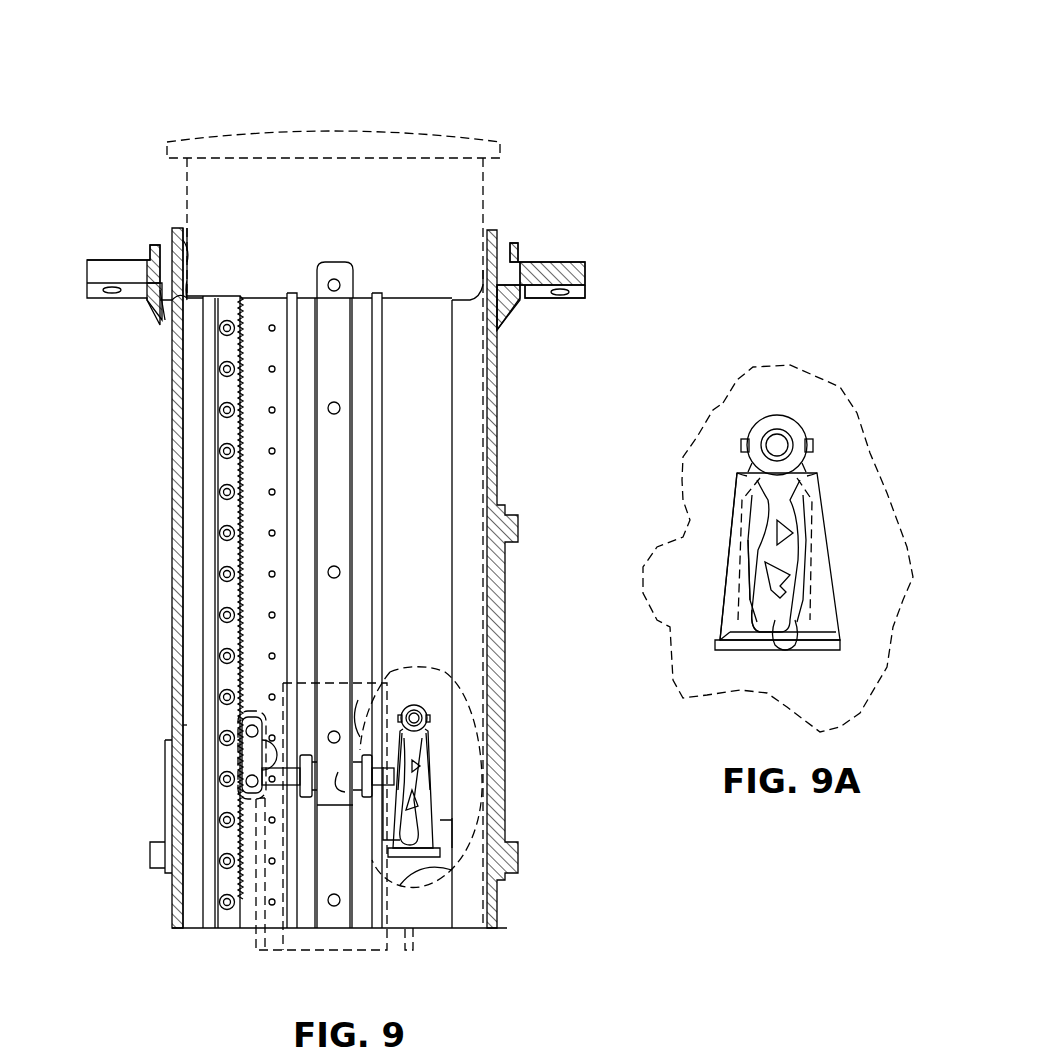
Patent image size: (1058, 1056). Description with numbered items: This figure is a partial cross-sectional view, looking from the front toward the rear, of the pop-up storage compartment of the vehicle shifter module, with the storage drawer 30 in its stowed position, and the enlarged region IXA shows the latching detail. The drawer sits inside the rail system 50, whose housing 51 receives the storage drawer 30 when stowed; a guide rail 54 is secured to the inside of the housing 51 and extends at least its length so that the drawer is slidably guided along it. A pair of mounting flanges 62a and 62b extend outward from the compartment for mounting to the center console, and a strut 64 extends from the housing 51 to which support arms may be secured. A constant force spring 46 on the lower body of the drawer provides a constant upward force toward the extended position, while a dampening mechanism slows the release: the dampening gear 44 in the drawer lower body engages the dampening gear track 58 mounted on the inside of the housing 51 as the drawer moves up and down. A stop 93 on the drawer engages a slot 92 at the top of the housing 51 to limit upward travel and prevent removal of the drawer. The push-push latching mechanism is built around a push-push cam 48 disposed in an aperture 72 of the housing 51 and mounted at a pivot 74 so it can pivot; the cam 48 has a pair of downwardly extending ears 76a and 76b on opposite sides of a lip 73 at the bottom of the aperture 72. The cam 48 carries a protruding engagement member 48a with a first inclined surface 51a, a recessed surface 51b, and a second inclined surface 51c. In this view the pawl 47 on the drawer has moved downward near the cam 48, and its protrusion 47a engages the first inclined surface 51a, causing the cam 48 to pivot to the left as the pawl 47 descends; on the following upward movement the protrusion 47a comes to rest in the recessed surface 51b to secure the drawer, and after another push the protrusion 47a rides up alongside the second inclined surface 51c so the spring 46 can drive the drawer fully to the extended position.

In FIG. 9, the storage drawer 30 is at (160, 124).
In FIG. 9, the slot 92 is at (187, 262).
In FIG. 9, the mounting flange 62b is at (110, 260).
In FIG. 9, the mounting flange 62a is at (572, 262).
In FIG. 9, the housing 51 is at (172, 402).
In FIG. 9, the dampening gear track 58 is at (227, 510).
In FIG. 9, the rail system 50 is at (163, 633).
In FIG. 9, the stop 93 is at (186, 725).
In FIG. 9, the dampening gear 44 is at (253, 757).
In FIG. 9, the strut 64 is at (165, 805).
In FIG. 9, the constant force spring 46 is at (312, 800).
In FIG. 9, the region IXA is at (403, 667).
In FIG. 9, the pivot 74 is at (416, 712).
In FIG. 9A, the pivot 74 is at (780, 440).
In FIG. 9, the pawl 47 is at (498, 723).
In FIG. 9A, the pawl 47 is at (812, 462).
In FIG. 9A, the protrusion 47a is at (800, 487).
In FIG. 9, the push-push cam 48 is at (380, 868).
In FIG. 9A, the push-push cam 48 is at (782, 530).
In FIG. 9A, the protruding engagement member 48a is at (795, 585).
In FIG. 9A, the first inclined surface 51a is at (795, 548).
In FIG. 9A, the recessed surface 51b is at (752, 615).
In FIG. 9A, the second inclined surface 51c is at (760, 575).
In FIG. 9, the aperture 72 is at (455, 818).
In FIG. 9A, the aperture 72 is at (725, 540).
In FIG. 9A, the lip 73 is at (827, 643).
In FIG. 9A, the ear 76a is at (742, 637).
In FIG. 9A, the ear 76b is at (815, 627).
In FIG. 9, the guide rail 54 is at (337, 916).